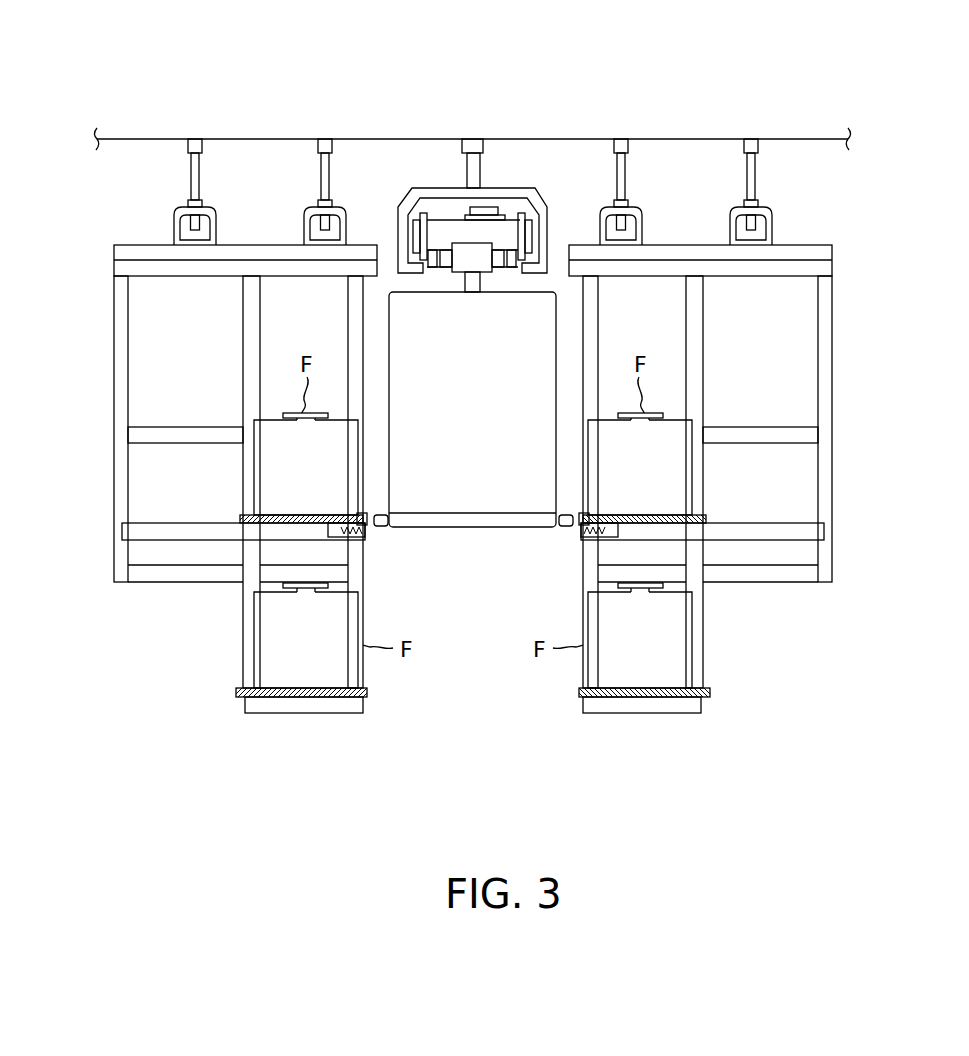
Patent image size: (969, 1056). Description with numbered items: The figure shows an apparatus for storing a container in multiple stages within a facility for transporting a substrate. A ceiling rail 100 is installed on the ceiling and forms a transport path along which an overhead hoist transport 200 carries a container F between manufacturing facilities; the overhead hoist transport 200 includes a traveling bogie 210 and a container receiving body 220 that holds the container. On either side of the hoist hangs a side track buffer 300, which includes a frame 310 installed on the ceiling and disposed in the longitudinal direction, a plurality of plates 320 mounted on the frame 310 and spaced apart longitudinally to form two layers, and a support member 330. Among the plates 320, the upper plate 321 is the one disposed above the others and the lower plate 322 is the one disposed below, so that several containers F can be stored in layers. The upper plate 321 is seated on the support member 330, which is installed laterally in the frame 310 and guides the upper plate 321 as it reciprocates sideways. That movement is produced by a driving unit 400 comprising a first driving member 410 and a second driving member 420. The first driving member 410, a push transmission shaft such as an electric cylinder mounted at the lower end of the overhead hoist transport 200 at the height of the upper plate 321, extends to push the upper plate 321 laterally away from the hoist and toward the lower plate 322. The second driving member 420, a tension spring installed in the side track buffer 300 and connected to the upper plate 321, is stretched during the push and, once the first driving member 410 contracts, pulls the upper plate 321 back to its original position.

The ceiling rail 100 is at (508, 188).
The overhead hoist transport 200 is at (412, 159).
The traveling bogie 210 is at (447, 220).
The container receiving body 220 is at (398, 273).
The side track buffer 300 is at (475, 535).
The frame 310 is at (114, 312).
The plate 320 is at (476, 619).
The upper plate 321 is at (300, 513).
The lower plate 322 is at (317, 688).
The support member 330 is at (190, 540).
The driving unit 400 is at (473, 559).
The first driving member 410 is at (475, 528).
The second driving member 420 is at (352, 538).